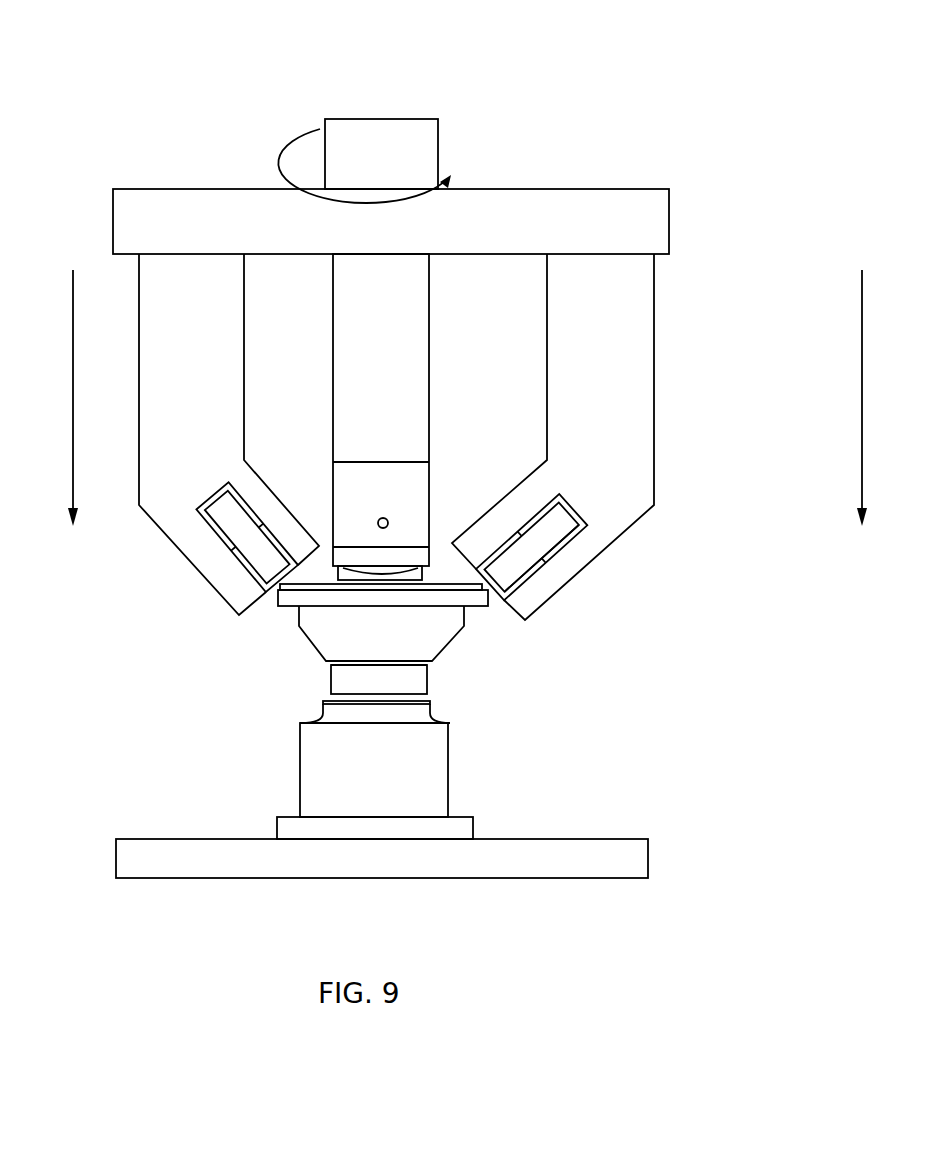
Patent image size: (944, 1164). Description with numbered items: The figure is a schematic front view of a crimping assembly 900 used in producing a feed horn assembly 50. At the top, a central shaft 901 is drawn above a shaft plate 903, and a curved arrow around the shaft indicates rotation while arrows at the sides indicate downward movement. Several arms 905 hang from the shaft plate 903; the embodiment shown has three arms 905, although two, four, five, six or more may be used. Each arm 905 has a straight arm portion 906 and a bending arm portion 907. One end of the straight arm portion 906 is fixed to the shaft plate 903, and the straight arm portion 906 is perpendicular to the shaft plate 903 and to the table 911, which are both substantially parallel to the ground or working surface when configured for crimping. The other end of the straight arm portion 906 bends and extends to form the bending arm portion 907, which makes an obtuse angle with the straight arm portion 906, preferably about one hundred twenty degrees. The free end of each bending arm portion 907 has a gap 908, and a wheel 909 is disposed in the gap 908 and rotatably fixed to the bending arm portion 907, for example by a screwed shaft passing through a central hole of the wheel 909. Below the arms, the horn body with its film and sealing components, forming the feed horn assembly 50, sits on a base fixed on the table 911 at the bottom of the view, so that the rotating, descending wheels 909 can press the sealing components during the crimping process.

The crimping assembly 900 is at (106, 45).
The central shaft 901 is at (438, 150).
The shaft plate 903 is at (675, 215).
The arm 905 is at (655, 317).
The straight arm portion 906 is at (620, 378).
The bending arm portion 907 is at (607, 532).
The gap 908 is at (560, 550).
The wheel 909 is at (503, 570).
The feed horn assembly 50 is at (413, 677).
The table 911 is at (648, 853).